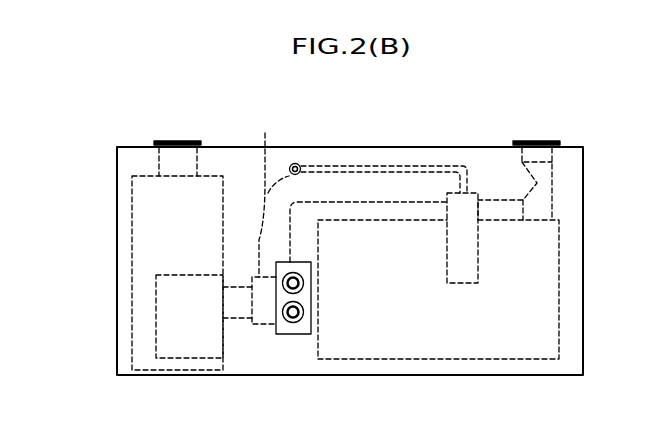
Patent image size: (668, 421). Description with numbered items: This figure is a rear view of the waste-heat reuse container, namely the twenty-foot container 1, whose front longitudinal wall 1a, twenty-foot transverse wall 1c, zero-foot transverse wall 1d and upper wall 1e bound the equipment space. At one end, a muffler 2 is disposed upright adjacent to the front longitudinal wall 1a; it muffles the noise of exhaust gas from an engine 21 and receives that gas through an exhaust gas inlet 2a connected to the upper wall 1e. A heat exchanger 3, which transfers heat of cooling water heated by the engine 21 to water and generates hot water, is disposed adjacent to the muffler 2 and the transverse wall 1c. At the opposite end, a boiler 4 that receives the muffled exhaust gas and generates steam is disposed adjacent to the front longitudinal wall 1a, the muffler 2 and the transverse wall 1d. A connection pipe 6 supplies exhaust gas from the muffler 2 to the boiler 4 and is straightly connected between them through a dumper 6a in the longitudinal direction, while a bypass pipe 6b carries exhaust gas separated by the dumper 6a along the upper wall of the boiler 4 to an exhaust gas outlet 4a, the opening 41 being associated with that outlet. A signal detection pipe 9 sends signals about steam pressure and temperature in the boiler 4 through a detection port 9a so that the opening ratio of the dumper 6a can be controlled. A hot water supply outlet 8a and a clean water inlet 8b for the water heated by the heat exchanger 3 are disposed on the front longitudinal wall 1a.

The 20-f container 1 is at (415, 129).
The front longitudinal wall 1a is at (255, 203).
The 20-f transverse wall 1c is at (110, 215).
The 0-f transverse wall 1d is at (590, 248).
The upper wall 1e is at (474, 141).
The muffler 2 is at (147, 240).
The exhaust gas inlet 2a is at (178, 140).
The engine 21 is at (167, 163).
The heat exchanger 3 is at (172, 322).
The boiler 4 is at (423, 315).
The exhaust gas outlet 4a is at (533, 143).
The drain port 41 is at (553, 177).
The connection pipe 6 is at (232, 322).
The dumper 6a is at (263, 325).
The bypass pipe 6b is at (270, 194).
The hot water supply outlet 8a is at (304, 280).
The clean water inlet 8b is at (304, 308).
The signal detection pipe 9 is at (335, 163).
The detection port 9a is at (295, 158).